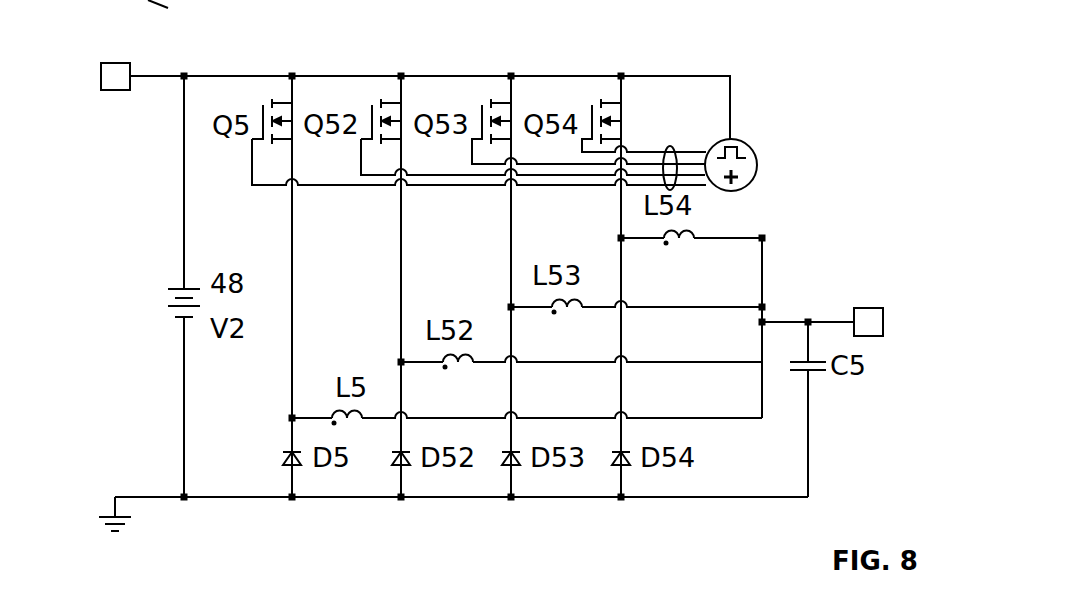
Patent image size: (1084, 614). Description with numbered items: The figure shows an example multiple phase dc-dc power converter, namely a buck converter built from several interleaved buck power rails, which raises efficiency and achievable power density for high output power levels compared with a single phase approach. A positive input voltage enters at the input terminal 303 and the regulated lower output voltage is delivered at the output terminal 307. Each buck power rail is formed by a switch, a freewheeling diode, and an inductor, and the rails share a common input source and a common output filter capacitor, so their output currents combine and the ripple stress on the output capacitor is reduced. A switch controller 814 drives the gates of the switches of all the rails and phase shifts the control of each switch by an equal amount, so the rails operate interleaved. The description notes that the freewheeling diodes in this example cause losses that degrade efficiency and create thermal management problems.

The +48V input terminal 303 is at (112, 90).
The +12V output terminal 307 is at (871, 336).
The switch controller 814 is at (745, 141).